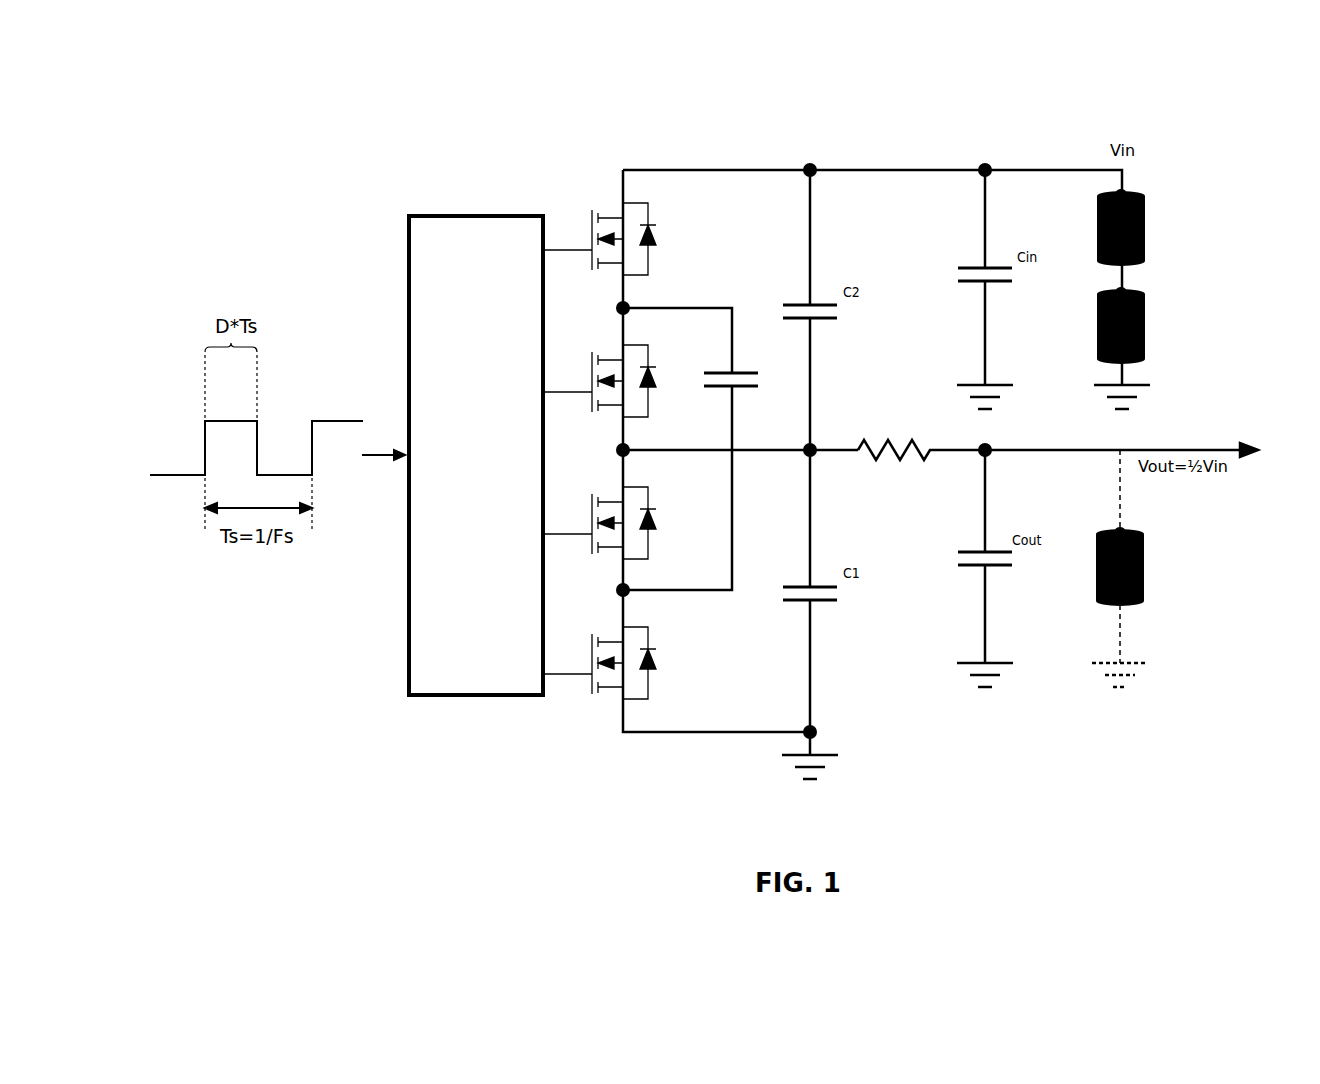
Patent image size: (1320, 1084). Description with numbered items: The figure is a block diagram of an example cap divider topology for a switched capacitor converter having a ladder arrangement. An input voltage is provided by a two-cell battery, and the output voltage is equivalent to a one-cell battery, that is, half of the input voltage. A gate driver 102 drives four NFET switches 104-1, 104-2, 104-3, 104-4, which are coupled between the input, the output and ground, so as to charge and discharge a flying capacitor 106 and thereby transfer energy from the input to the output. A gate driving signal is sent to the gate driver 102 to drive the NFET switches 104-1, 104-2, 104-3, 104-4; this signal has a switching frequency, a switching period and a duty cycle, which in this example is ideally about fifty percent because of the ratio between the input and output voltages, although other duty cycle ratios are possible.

The gate driver 102 is at (476, 455).
The NFET switch 104-1 is at (662, 242).
The NFET switch 104-2 is at (650, 345).
The NFET switch 104-3 is at (650, 478).
The NFET switch 104-4 is at (655, 657).
The flying capacitor Cfly 106 is at (766, 378).